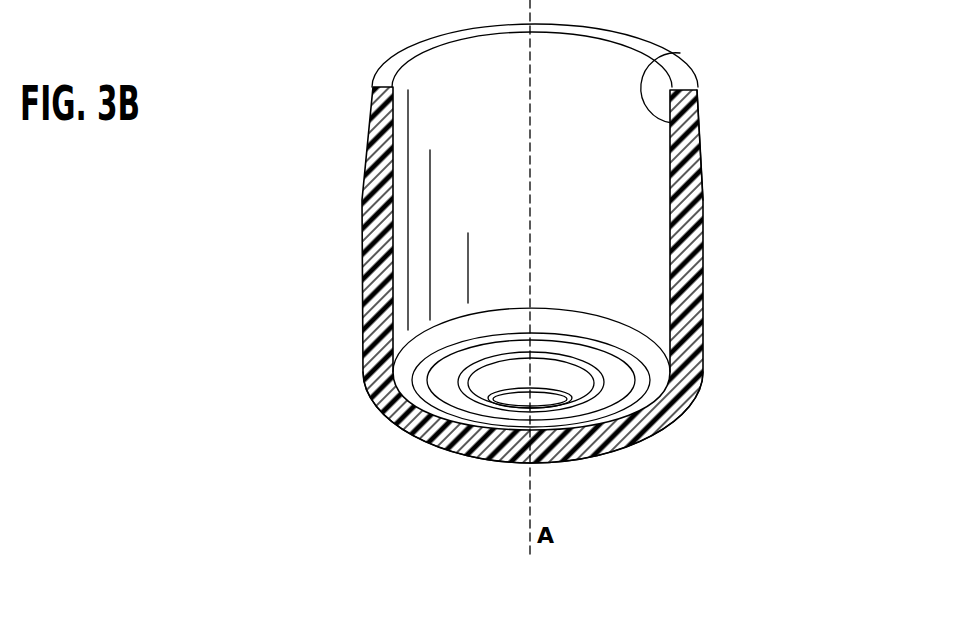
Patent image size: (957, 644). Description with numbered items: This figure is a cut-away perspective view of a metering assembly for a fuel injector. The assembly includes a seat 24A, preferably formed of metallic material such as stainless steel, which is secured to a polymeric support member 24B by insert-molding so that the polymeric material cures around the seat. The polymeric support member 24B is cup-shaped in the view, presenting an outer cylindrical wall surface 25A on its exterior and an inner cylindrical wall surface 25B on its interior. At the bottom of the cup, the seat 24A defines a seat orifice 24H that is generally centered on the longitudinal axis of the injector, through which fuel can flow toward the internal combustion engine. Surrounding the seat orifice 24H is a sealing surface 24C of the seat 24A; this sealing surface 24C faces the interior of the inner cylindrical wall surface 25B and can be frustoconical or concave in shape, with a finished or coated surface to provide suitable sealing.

The seat 24A is at (575, 413).
The polymeric support member 24B is at (377, 245).
The sealing surface 24C is at (583, 385).
The seat orifice 24H is at (547, 402).
The outer cylindrical wall surface 25A is at (703, 143).
The inner cylindrical wall surface 25B is at (667, 50).